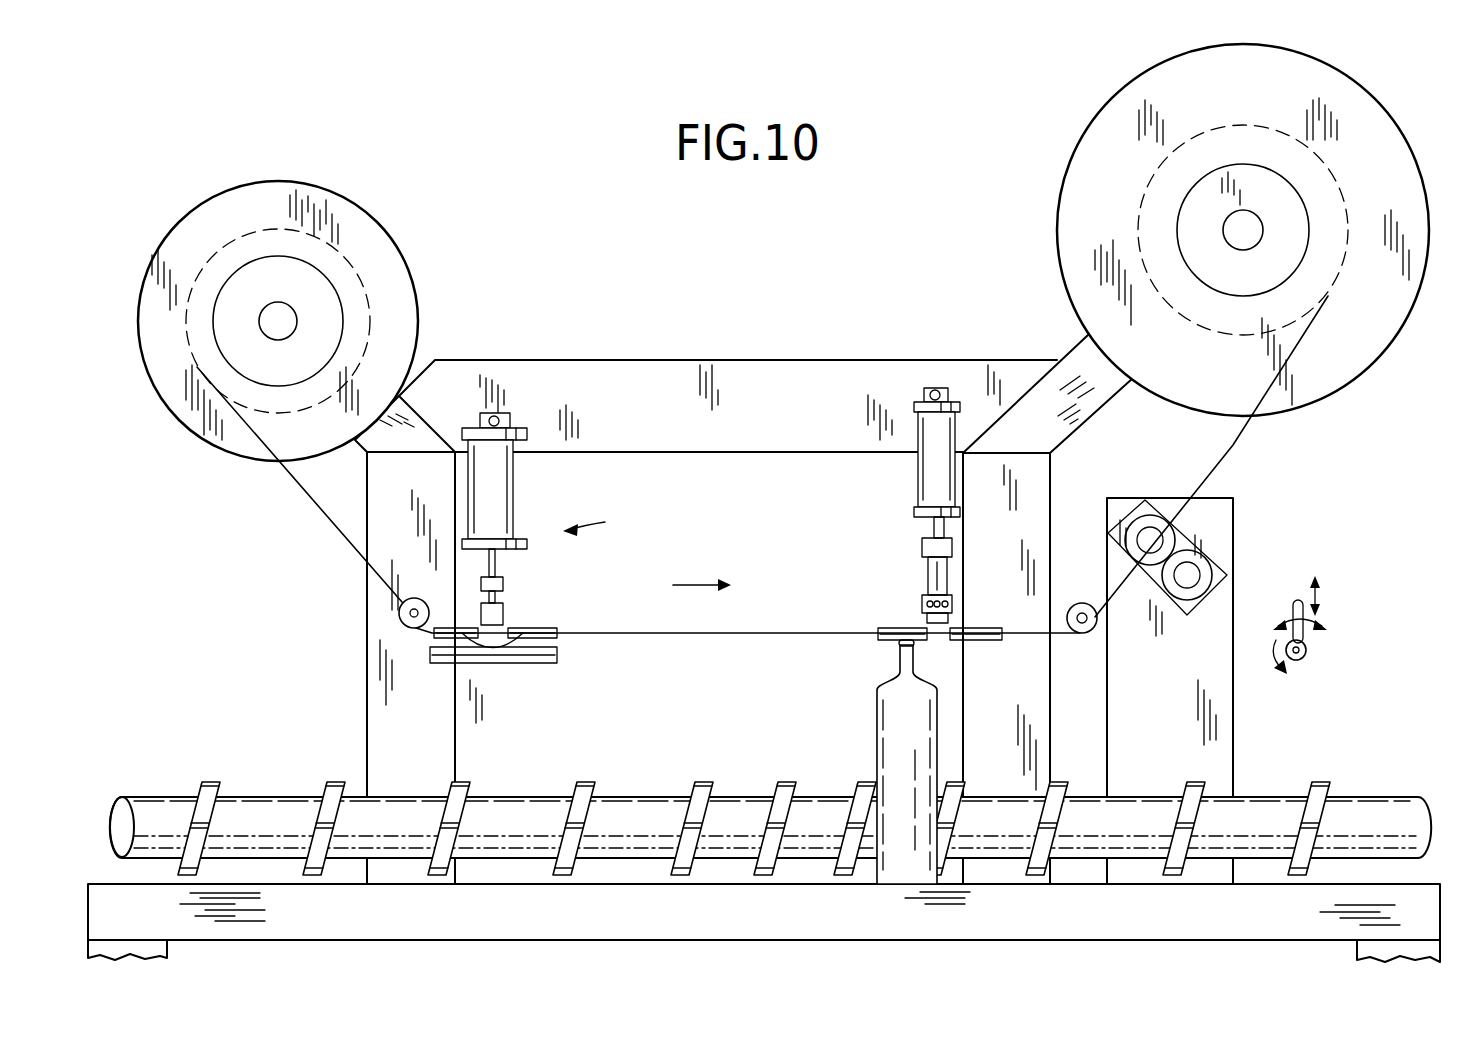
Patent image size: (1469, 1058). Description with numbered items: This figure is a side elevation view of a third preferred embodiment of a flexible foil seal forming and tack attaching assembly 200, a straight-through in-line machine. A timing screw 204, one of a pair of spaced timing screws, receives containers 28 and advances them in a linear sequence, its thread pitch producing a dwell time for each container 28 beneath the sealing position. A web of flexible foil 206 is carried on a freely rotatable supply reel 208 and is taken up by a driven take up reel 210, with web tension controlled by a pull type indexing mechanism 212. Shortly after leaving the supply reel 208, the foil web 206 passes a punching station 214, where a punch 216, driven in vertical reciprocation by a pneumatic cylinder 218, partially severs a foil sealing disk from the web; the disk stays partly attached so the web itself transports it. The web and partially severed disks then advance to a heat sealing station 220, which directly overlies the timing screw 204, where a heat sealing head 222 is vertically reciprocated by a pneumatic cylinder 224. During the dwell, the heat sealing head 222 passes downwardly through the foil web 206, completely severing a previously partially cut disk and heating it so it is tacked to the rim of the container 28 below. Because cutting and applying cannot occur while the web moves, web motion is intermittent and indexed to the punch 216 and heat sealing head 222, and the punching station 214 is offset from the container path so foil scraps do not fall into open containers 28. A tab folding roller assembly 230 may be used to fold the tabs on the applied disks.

The flexible foil seal forming and tack attaching assembly 200 is at (766, 278).
The timing screw 204 is at (272, 815).
The web of flexible foil 206 is at (345, 540).
The supply reel 208 is at (413, 277).
The take up reel 210 is at (1397, 110).
The pull type indexing mechanism 212 is at (1200, 548).
The punching station 214 is at (647, 550).
The punch 216 is at (507, 609).
The pneumatic cylinder 218 is at (500, 492).
The heat sealing station 220 is at (898, 552).
The heat sealing head 222 is at (920, 620).
The pneumatic cylinder 224 is at (927, 487).
The tab folding roller assembly 230 is at (1365, 643).
The container 28 is at (893, 735).